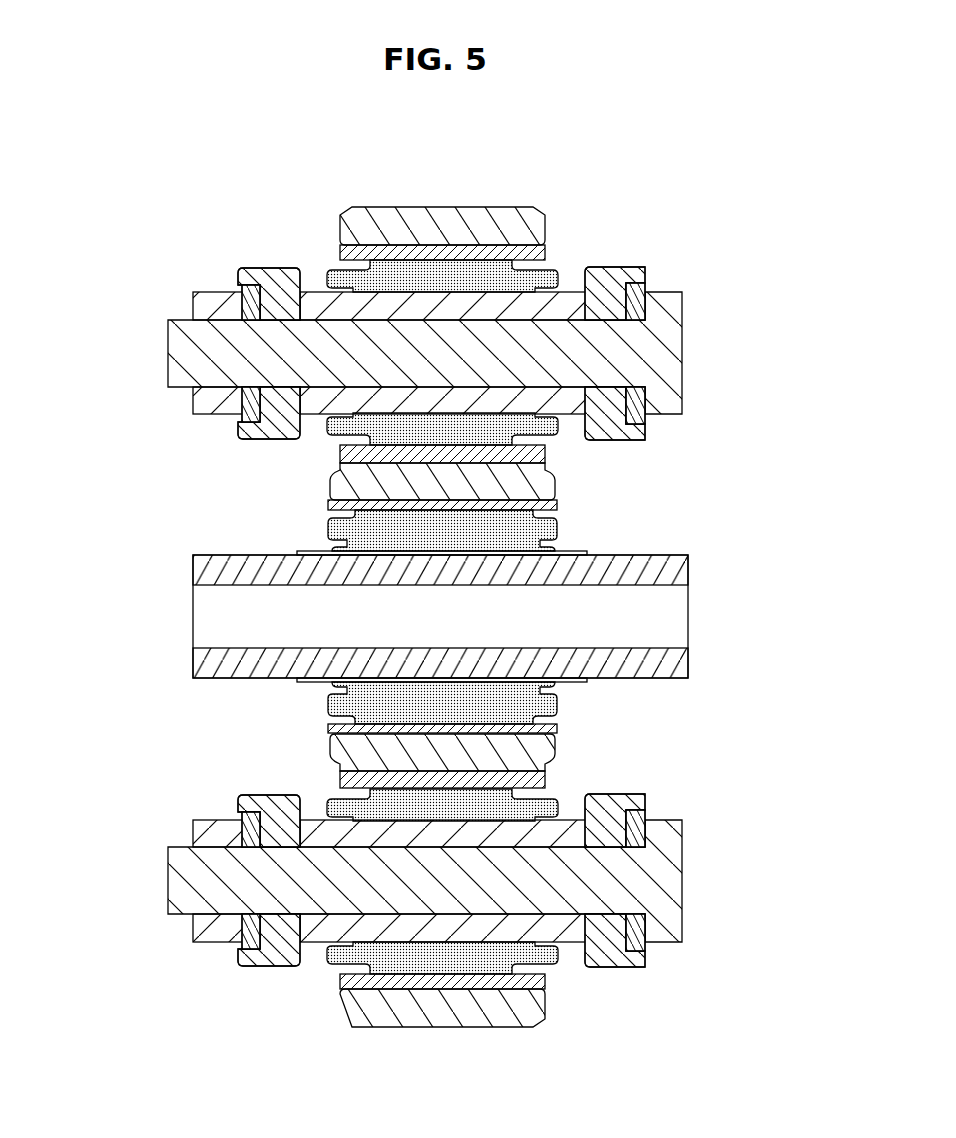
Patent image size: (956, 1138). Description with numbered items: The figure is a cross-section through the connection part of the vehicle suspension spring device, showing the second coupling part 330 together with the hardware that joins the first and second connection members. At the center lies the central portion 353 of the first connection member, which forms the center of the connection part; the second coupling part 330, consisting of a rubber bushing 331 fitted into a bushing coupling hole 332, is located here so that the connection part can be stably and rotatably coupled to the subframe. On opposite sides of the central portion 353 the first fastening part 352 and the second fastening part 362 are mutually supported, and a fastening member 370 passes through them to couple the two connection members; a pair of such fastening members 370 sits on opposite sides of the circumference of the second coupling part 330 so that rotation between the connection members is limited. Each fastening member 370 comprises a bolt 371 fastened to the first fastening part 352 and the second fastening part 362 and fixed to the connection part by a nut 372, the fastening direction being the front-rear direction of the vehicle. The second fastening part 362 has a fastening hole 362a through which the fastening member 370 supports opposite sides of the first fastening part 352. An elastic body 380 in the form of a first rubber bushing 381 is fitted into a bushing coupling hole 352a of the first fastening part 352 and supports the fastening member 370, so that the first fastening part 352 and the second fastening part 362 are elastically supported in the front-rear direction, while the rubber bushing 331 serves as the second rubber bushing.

The second coupling part 330 is at (359, 551).
The rubber bushing 331 is at (305, 553).
The bushing coupling hole 332 is at (405, 503).
The first fastening part 352 is at (501, 582).
The bushing coupling hole 352a is at (493, 247).
The central portion 353 is at (545, 493).
The second fastening part 362 is at (694, 612).
The fastening hole 362a is at (603, 380).
The fastening member 370 is at (489, 575).
The bolt 371 is at (672, 363).
The nut 372 is at (213, 300).
The elastic body 380 is at (260, 567).
The rubber bushing 381 is at (318, 284).